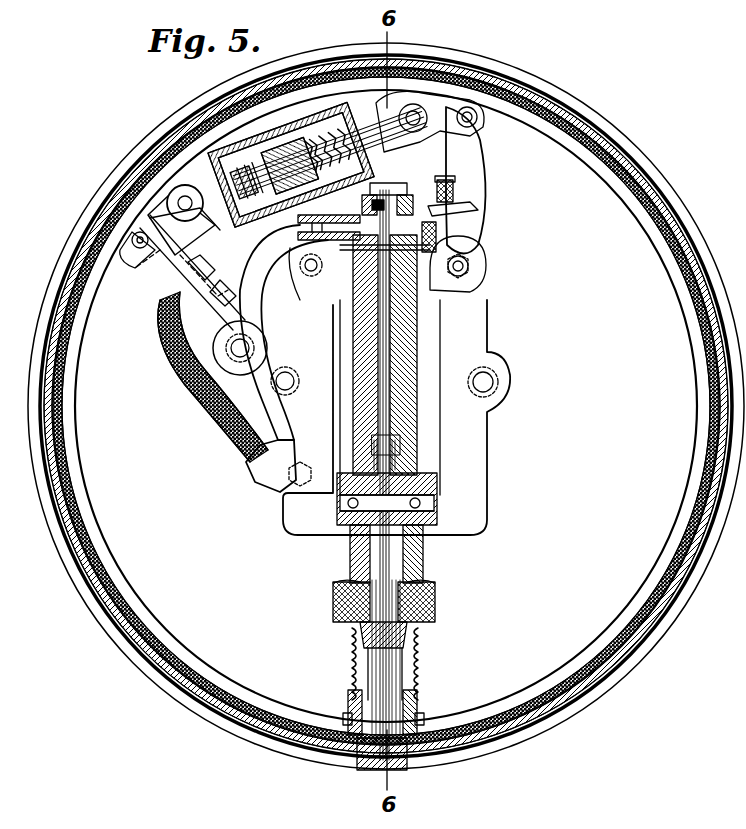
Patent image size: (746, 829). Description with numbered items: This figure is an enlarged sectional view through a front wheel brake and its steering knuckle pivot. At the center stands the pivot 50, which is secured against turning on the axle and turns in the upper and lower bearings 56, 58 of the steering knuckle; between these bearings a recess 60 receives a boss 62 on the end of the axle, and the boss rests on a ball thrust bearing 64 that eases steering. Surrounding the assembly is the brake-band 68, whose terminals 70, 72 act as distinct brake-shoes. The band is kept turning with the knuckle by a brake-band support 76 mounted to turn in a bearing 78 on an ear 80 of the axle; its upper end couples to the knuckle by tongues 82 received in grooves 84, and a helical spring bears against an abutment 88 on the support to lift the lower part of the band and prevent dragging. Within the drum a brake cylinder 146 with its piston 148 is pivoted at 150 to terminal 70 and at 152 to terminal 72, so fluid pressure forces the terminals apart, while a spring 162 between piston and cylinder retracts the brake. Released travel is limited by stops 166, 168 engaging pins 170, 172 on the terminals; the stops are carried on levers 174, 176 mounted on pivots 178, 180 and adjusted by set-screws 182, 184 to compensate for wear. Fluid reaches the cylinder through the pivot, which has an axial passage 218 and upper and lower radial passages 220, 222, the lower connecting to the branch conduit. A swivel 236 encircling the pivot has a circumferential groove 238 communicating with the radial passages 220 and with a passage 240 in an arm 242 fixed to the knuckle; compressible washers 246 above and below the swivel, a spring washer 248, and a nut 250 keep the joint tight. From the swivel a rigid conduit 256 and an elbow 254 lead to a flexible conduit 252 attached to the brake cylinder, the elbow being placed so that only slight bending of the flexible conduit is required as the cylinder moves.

The pivot 50 is at (402, 468).
The upper bearing 56 is at (424, 285).
The lower bearing 58 is at (352, 560).
The recess 60 is at (442, 425).
The boss 62 is at (432, 402).
The ball thrust bearing 64 is at (347, 503).
The brake-band 68 is at (368, 745).
The brake-band terminal 70 is at (157, 160).
The brake-band terminal 72 is at (452, 75).
The brake-band support 76 is at (398, 690).
The bearing 78 is at (352, 692).
The ear 80 is at (420, 691).
The tongues 82 is at (333, 604).
The grooves 84 is at (335, 586).
The abutment 88 is at (420, 624).
The brake cylinder 146 is at (272, 140).
The piston 148 is at (246, 150).
The pivotal connection 150 is at (172, 205).
The pivotal connection 152 is at (416, 125).
The spring 162 is at (322, 118).
The stop 166 is at (158, 270).
The stop 168 is at (472, 120).
The pin 170 is at (132, 240).
The pin 172 is at (500, 108).
The lever 174 is at (202, 318).
The lever 176 is at (482, 216).
The pivot 178 is at (239, 362).
The pivot 180 is at (470, 266).
The set-screw 182 is at (206, 292).
The set-screw 184 is at (456, 182).
The axial passage 218 is at (398, 362).
The upper radial passage 220 is at (436, 249).
The lower radial passage 222 is at (396, 451).
The swivel 236 is at (440, 238).
The circumferential groove 238 is at (340, 242).
The passage 240 is at (316, 272).
The arm 242 is at (322, 226).
The compressible washers 246 is at (448, 205).
The spring washer 248 is at (460, 194).
The nut 250 is at (396, 187).
The flexible conduit 252 is at (162, 366).
The elbow 254 is at (266, 483).
The rigid conduit 256 is at (270, 322).